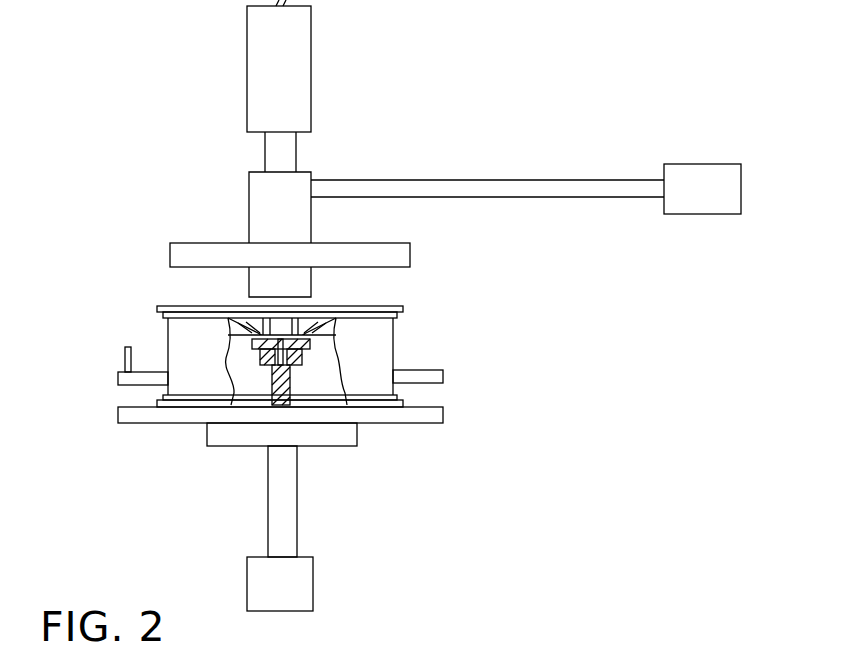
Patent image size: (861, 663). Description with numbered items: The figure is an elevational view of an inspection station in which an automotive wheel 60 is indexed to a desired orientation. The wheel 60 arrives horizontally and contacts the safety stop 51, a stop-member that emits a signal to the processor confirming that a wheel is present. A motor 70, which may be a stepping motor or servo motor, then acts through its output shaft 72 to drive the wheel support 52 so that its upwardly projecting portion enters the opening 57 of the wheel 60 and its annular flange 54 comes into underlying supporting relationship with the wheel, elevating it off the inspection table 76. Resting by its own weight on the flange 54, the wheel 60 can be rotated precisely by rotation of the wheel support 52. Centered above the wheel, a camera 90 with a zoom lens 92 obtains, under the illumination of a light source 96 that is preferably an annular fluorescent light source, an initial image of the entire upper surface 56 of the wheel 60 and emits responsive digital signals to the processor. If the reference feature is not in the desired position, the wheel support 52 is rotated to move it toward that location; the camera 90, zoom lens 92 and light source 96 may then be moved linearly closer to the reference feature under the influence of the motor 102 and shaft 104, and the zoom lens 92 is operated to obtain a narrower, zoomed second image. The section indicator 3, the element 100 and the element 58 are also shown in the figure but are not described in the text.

The section line 3- 3 is at (182, 298).
The actuator / drive connection 100 is at (369, 0).
The camera 90 is at (313, 95).
The zoom lens 92 is at (248, 196).
The light source 96 is at (221, 242).
The shaft 104 is at (497, 180).
The motor 102 is at (678, 164).
The wheel 60 is at (166, 337).
The opening 57 is at (320, 378).
The upper surface 56 is at (336, 313).
The annular flange 54 is at (293, 405).
The safety stop 51 is at (125, 361).
The inspection table 76 is at (114, 379).
The base plate 58 is at (352, 428).
The wheel support 52 is at (236, 451).
The output shaft 72 is at (268, 512).
The motor 70 is at (313, 585).